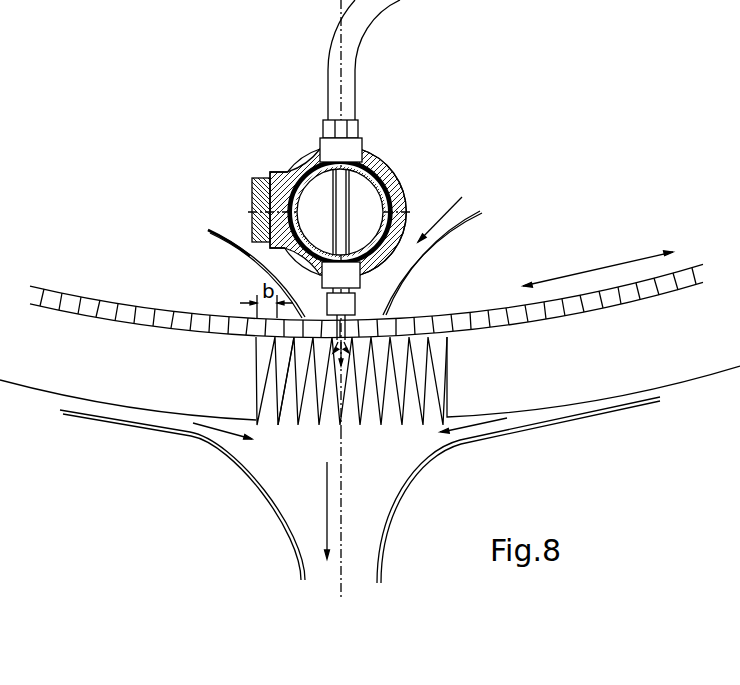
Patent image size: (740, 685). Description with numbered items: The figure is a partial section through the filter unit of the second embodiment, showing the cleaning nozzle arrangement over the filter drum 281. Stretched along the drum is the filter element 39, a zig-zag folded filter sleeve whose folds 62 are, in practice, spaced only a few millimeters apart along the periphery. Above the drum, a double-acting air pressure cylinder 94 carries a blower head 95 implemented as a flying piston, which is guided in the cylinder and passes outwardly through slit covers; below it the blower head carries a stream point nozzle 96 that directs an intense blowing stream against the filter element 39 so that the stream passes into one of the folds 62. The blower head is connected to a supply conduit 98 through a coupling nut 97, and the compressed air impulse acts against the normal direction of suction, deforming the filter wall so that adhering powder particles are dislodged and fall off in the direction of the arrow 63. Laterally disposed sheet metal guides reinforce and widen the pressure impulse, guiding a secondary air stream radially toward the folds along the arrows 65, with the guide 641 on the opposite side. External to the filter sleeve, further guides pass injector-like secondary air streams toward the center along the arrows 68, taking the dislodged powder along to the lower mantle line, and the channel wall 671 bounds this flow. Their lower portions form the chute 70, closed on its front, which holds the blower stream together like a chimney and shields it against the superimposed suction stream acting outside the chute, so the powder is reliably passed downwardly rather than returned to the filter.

The supply tube 98 is at (380, 16).
The coupling nut 97 is at (319, 121).
The blower head 95 is at (372, 137).
The double-acting air pressure cylinder 94 is at (398, 168).
The arrows 65 is at (233, 233).
The right guide plate 641 is at (425, 258).
The stream point nozzle 96 is at (364, 305).
The filter drum 281 is at (70, 295).
The arrows 68 is at (239, 440).
The filter element 39 is at (291, 429).
The folds 62 is at (412, 418).
The arrow 63 is at (195, 495).
The channel wall 671 is at (408, 482).
The chute 70 is at (360, 522).